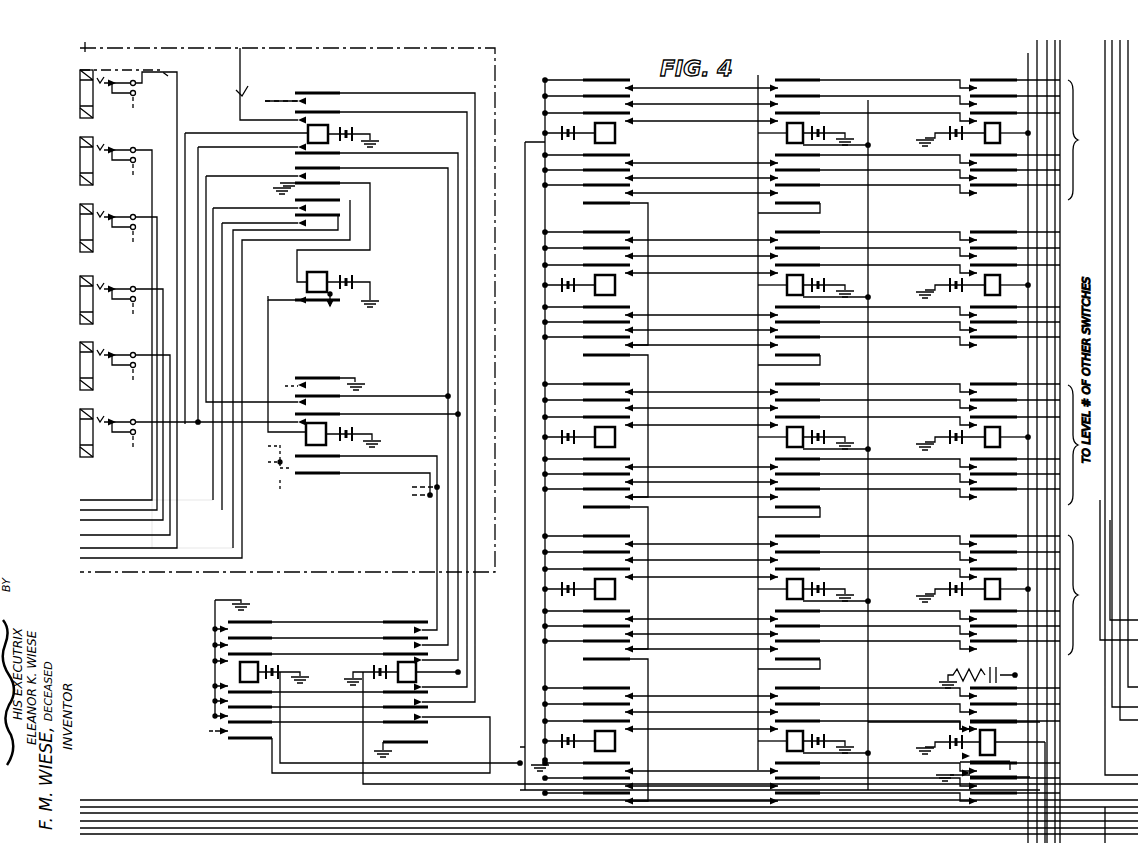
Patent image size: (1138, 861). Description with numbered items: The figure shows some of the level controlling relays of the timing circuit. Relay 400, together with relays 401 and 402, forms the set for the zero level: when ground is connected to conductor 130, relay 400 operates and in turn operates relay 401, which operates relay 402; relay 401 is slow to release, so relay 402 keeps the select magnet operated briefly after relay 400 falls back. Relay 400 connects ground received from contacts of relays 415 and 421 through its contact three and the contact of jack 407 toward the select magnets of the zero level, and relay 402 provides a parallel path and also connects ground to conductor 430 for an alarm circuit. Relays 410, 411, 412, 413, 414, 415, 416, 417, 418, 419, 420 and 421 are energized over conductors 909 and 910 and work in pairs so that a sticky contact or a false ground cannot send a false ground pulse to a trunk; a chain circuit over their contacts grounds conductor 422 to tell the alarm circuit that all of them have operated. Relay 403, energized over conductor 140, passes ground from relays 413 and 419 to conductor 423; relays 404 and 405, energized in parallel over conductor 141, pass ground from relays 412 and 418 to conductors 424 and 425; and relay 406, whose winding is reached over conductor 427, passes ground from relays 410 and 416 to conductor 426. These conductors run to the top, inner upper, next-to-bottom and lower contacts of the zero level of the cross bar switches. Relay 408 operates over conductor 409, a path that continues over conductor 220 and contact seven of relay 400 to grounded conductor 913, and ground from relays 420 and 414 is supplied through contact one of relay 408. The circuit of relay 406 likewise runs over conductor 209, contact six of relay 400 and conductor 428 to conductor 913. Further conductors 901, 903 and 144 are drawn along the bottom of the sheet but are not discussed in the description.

The relay 400 is at (320, 119).
The relay 401 is at (307, 276).
The relay 402 is at (312, 478).
The relay 403 is at (990, 579).
The relay 404 is at (992, 447).
The relay 405 is at (992, 295).
The relay 406 is at (990, 143).
The jack 407 is at (118, 410).
The relay 408 is at (1000, 714).
The conductor 409 is at (1050, 742).
The relay 410 is at (615, 133).
The relay 411 is at (615, 285).
The relay 412 is at (615, 437).
The relay 413 is at (615, 589).
The relay 414 is at (615, 741).
The relay 415 is at (404, 662).
The relay 416 is at (787, 133).
The relay 417 is at (787, 285).
The relay 418 is at (787, 437).
The relay 419 is at (787, 589).
The relay 420 is at (787, 741).
The relay 421 is at (248, 662).
The conductor 422 is at (225, 738).
The conductor 423 is at (1046, 70).
The conductor 424 is at (1048, 84).
The conductor 425 is at (1058, 96).
The conductor 426 is at (1028, 61).
The conductor 427 is at (1010, 656).
The conductor 428 is at (174, 508).
The conductor 430 is at (288, 385).
The conductor 130 is at (160, 502).
The conductor 913 is at (219, 520).
The conductor 220 is at (227, 534).
The conductor 209 is at (227, 548).
The conductor 901 is at (1106, 802).
The conductor 140 is at (140, 796).
The conductor 141 is at (162, 813).
The conductor 903 is at (176, 821).
The conductor 144 is at (220, 830).
The conductor 909 is at (852, 790).
The conductor 910 is at (910, 789).